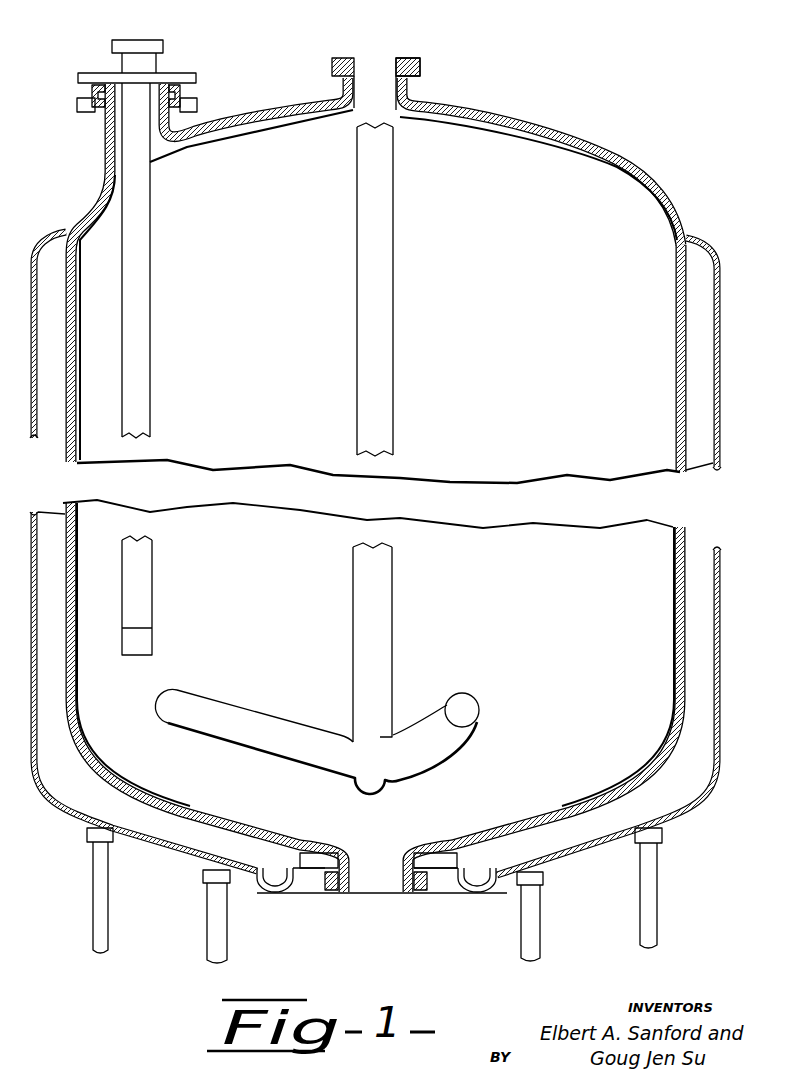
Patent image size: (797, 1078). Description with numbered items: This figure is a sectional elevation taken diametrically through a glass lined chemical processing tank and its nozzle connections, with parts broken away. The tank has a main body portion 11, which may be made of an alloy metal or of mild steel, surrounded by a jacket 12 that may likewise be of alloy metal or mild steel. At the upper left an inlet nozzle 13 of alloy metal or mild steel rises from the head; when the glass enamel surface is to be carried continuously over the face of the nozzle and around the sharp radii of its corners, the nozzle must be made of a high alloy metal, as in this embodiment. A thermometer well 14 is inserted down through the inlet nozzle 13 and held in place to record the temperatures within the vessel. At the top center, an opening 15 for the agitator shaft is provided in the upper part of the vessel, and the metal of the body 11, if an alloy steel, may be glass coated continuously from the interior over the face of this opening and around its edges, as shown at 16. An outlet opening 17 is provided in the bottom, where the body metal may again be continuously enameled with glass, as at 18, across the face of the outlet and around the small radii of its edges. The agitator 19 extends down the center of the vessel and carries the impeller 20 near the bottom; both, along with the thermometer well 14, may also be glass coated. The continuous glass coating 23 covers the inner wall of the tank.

The main body portion 11 is at (672, 206).
The jacket 12 is at (722, 313).
The inlet nozzle 13 is at (185, 78).
The thermometer well 14 is at (133, 162).
The opening for agitator shaft 15 is at (381, 67).
The glass coating at agitator shaft opening 16 is at (452, 47).
The outlet opening 17 is at (380, 878).
The glass enamel at outlet opening 18 is at (334, 895).
The agitator 19 is at (385, 170).
The impeller 20 is at (185, 700).
The continuous glass coating 23 is at (617, 165).